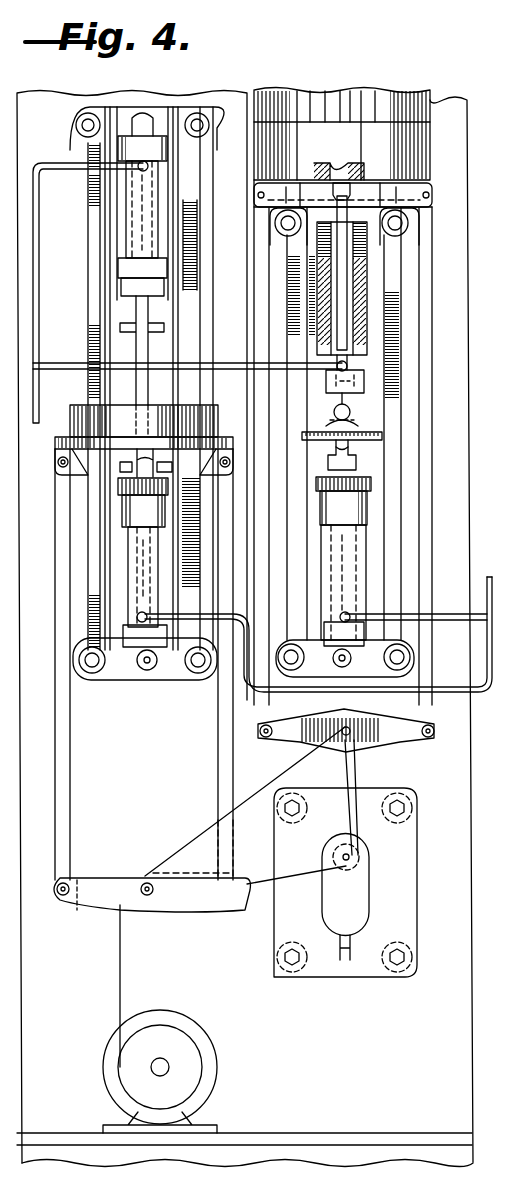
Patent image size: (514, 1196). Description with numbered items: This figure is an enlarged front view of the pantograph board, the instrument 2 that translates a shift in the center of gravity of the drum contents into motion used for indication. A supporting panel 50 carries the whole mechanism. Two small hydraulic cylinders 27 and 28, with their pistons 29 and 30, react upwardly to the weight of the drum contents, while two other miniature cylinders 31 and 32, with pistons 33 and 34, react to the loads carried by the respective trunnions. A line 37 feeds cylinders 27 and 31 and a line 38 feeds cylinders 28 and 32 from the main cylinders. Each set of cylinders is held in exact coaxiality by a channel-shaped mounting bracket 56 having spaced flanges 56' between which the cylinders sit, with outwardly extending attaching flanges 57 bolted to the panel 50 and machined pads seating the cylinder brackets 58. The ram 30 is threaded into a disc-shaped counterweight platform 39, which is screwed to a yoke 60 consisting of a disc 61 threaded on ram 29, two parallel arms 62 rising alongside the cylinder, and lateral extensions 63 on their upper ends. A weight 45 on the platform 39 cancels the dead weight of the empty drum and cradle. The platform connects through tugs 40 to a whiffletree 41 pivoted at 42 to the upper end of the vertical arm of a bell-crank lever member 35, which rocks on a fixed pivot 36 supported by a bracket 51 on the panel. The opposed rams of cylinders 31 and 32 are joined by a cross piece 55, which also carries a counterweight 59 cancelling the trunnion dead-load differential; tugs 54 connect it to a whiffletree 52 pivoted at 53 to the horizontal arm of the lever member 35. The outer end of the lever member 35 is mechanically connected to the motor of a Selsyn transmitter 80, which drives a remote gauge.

The machine 2 is at (463, 282).
The hydraulic cylinder 27 is at (350, 579).
The hydraulic cylinder 28 is at (362, 396).
The piston 29 is at (354, 470).
The piston 30 is at (348, 285).
The miniature cylinder 31 is at (135, 570).
The miniature cylinder 32 is at (135, 202).
The piston 33 is at (152, 476).
The piston 34 is at (135, 343).
The lever member 35 is at (241, 820).
The fixed pivot 36 is at (335, 859).
The line 37 is at (494, 605).
The line 38 is at (41, 397).
The counterweight platform 39 is at (385, 180).
The tugs 40 is at (265, 284).
The whiffletree 41 is at (404, 745).
The pivot 42 is at (346, 738).
The weight 45 is at (420, 92).
The supporting panel 50 is at (236, 113).
The bracket 51 is at (408, 857).
The whiffletree 52 is at (86, 885).
The pivot 53 is at (150, 884).
The tugs 54 is at (72, 761).
The cross piece 55 is at (238, 442).
The mounting bracket 56 is at (161, 396).
The flanges 56' is at (261, 378).
The attaching flanges 57 is at (76, 125).
The cylinder brackets 58 is at (162, 118).
The counterweight 59 is at (208, 410).
The yoke 60 is at (258, 208).
The disc 61 is at (386, 436).
The arms 62 is at (312, 345).
The lateral extensions 63 is at (290, 180).
The Selsyn transmitter 80 is at (190, 1030).